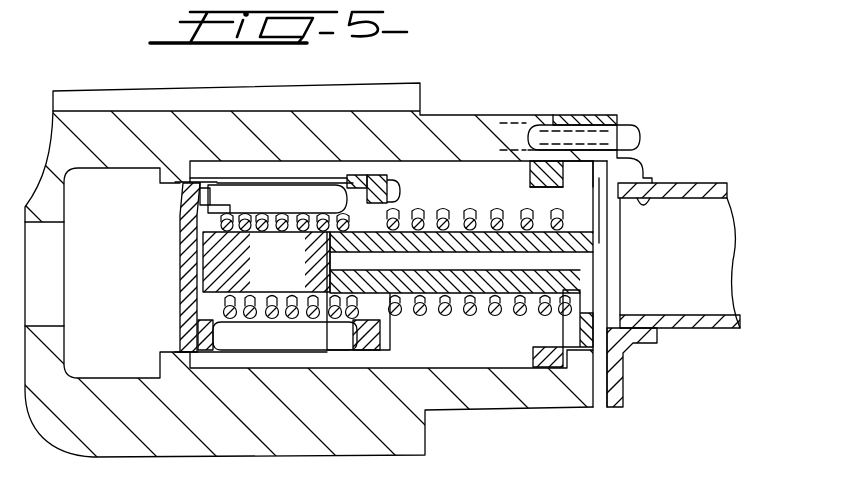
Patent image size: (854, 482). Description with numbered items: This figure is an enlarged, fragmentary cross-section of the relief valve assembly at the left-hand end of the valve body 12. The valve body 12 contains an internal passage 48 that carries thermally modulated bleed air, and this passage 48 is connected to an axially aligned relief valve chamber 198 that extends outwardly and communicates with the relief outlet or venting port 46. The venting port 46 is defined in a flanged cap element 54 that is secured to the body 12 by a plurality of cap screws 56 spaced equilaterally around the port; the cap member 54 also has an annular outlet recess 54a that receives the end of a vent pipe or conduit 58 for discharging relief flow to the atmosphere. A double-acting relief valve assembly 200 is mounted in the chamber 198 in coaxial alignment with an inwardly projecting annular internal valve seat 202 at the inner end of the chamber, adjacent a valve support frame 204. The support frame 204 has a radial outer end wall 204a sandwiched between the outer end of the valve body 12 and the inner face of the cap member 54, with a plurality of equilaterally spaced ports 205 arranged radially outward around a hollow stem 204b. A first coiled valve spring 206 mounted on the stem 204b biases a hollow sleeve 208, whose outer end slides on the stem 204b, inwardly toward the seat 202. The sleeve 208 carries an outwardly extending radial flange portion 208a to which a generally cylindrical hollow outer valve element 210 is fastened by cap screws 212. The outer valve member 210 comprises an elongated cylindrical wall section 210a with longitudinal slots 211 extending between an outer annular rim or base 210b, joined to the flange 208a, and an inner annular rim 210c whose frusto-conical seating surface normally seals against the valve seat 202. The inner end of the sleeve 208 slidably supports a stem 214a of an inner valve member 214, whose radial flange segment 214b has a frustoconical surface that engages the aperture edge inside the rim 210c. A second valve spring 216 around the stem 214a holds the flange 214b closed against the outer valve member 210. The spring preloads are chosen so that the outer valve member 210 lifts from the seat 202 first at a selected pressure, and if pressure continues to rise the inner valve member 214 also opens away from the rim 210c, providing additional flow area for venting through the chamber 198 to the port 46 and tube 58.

The valve body 12 is at (450, 116).
The relief outlet or venting port 46 is at (622, 312).
The internal passage 48 is at (103, 377).
The flanged cap element 54 is at (613, 390).
The annular outlet recess 54a is at (652, 197).
The cap screws 56 is at (632, 123).
The vent pipe or conduit 58 is at (712, 330).
The relief valve chamber 198 is at (400, 365).
The double-acting relief valve assembly 200 is at (368, 348).
The annular internal valve seat 202 is at (190, 340).
The valve support frame 204 is at (583, 407).
The radial outer end wall 204a is at (577, 112).
The hollow stem 204b is at (507, 283).
The ports 205 is at (580, 187).
The first coiled valve spring 206 is at (443, 208).
The hollow sleeve 208 is at (327, 350).
The radial flange portion 208a is at (378, 370).
The outer valve element 210 is at (262, 365).
The elongated cylindrical wall section 210a is at (240, 180).
The outer annular rim or base 210b is at (352, 183).
The annular rim 210c is at (195, 312).
The slots 211 is at (288, 177).
The cap screws 212 is at (413, 172).
The inner valve member 214 is at (198, 253).
The stem 214a is at (305, 276).
The radial flange segment 214b is at (227, 160).
The second valve spring 216 is at (242, 218).